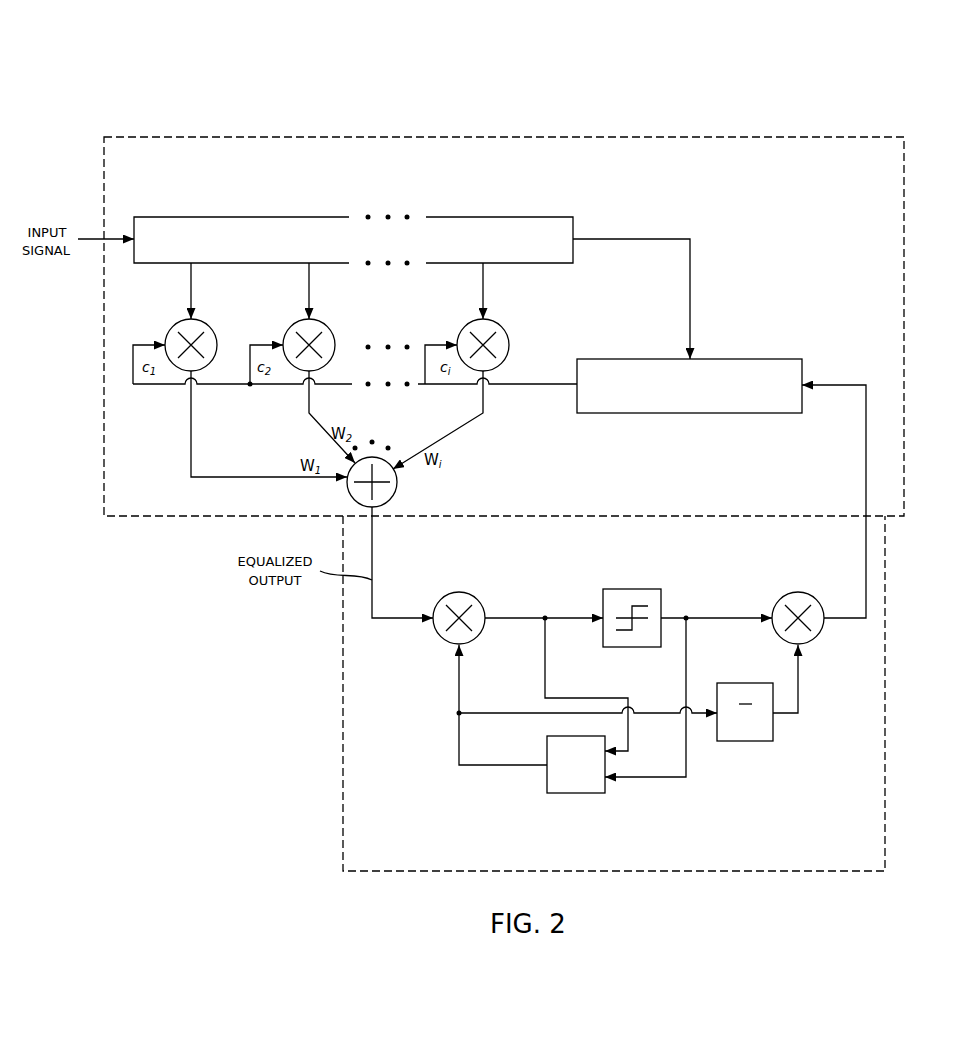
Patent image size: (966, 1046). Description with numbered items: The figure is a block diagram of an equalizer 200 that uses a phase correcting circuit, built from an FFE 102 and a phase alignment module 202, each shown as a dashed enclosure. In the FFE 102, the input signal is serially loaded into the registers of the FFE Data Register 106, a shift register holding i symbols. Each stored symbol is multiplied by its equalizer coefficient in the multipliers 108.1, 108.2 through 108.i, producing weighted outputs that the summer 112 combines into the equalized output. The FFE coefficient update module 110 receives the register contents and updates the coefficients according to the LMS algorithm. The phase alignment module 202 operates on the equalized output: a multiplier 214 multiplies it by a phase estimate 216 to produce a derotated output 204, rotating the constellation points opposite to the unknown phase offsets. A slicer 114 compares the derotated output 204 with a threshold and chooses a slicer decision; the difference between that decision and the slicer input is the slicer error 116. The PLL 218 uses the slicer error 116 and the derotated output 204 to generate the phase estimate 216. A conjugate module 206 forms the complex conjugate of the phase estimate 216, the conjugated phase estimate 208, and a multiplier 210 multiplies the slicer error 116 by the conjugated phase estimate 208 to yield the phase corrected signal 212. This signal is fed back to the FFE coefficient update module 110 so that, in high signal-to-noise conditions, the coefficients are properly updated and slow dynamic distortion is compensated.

The equalizer 200 is at (65, 126).
The FFE 102 is at (904, 138).
The FFE Data Register 106 is at (573, 217).
The multiplier 108.1 is at (215, 330).
The multiplier 108.2 is at (333, 330).
The multiplier 108.i is at (508, 330).
The FFE coefficient update module 110 is at (802, 359).
The summer 112 is at (398, 484).
The slicer 114 is at (648, 589).
The slicer error 116 is at (727, 618).
The phase alignment module 202 is at (885, 712).
The derotated output 204 is at (514, 618).
The conjugate module 206 is at (773, 742).
The conjugated phase estimate 208 is at (798, 690).
The multiplier 210 is at (820, 598).
The phase corrected signal 212 is at (866, 474).
The multiplier 214 is at (480, 598).
The phase estimate 216 is at (515, 766).
The phase locked loop (PLL) 218 is at (605, 794).